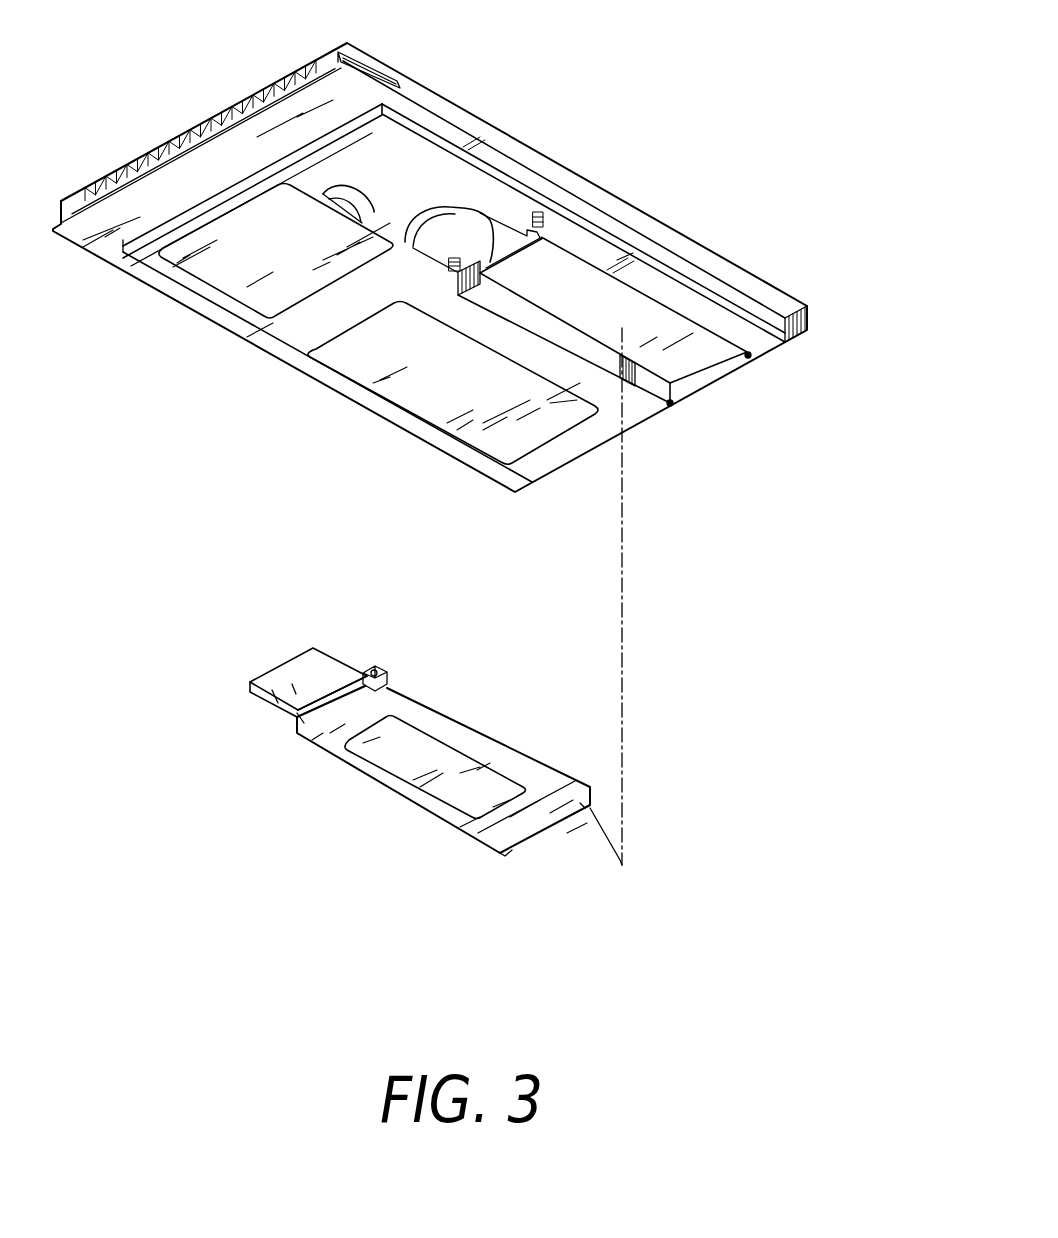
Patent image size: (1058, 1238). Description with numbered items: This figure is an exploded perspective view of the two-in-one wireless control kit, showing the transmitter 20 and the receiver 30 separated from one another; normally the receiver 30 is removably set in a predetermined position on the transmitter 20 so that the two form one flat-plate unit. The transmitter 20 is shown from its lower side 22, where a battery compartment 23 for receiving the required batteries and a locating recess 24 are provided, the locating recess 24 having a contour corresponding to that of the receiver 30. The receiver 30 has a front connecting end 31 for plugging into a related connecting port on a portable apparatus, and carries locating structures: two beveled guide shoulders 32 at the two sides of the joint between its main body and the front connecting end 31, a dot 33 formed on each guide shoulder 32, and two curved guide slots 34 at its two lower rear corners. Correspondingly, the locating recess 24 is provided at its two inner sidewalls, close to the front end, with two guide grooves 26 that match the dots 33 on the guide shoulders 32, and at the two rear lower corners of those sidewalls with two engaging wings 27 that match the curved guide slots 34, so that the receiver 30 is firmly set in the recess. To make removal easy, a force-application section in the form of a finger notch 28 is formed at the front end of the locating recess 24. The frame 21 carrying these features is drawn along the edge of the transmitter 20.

The transmitter 20 is at (780, 294).
The frame 21 is at (720, 253).
The lower side 22 is at (293, 327).
The battery compartment 23 is at (313, 187).
The locating recess 24 is at (687, 357).
The guide grooves 26 is at (456, 266).
The engaging wings 27 is at (748, 357).
The finger notch 28 is at (412, 217).
The receiver 30 is at (410, 790).
The front connecting end 31 is at (278, 698).
The beveled guide shoulders 32 is at (390, 673).
The dot 33 is at (368, 672).
The curved guide slots 34 is at (505, 856).